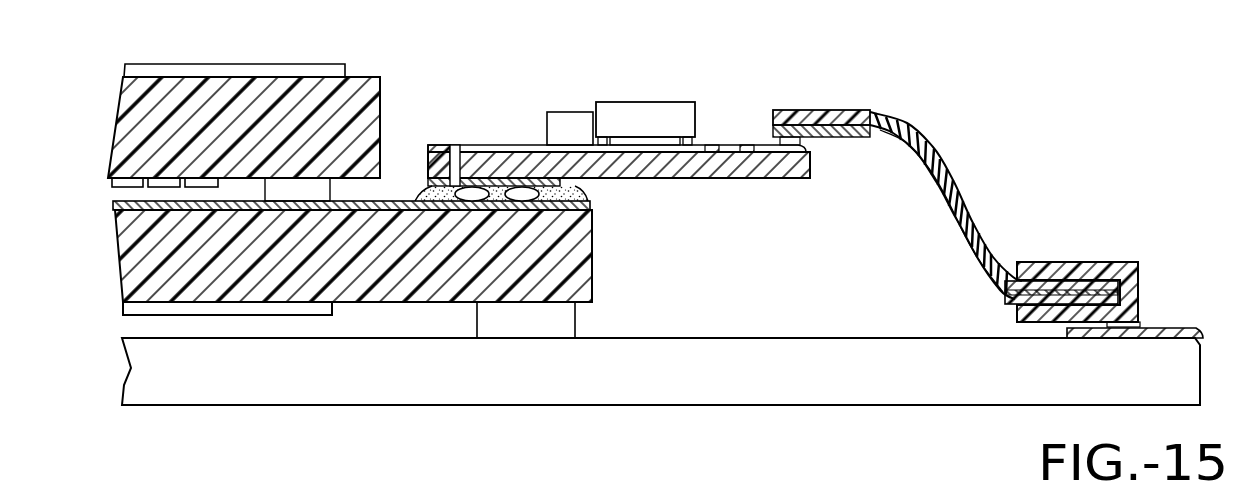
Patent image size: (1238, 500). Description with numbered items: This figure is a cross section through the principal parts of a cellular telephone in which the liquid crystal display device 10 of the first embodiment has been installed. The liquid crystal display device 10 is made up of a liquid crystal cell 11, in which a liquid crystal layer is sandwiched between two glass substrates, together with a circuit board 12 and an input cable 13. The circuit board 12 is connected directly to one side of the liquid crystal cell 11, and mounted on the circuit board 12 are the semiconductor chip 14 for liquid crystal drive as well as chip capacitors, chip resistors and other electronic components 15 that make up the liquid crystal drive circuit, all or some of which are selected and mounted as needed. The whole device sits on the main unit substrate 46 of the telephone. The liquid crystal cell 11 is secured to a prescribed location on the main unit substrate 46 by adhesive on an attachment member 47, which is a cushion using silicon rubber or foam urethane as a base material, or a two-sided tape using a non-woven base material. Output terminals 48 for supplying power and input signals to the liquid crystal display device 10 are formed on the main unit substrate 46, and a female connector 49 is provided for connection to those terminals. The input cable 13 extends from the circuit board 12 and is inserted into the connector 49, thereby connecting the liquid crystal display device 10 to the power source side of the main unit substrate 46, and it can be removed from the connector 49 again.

The liquid crystal display device 10 is at (427, 62).
The liquid crystal cell 11 is at (360, 101).
The circuit board 12 is at (712, 180).
The input cable 13 is at (921, 147).
The semiconductor chip 14 is at (648, 104).
The electronic components 15 is at (572, 111).
The main unit substrate 46 is at (920, 406).
The attachment member 47 is at (529, 327).
The output terminals 48 is at (1171, 327).
The female connector 49 is at (1071, 262).